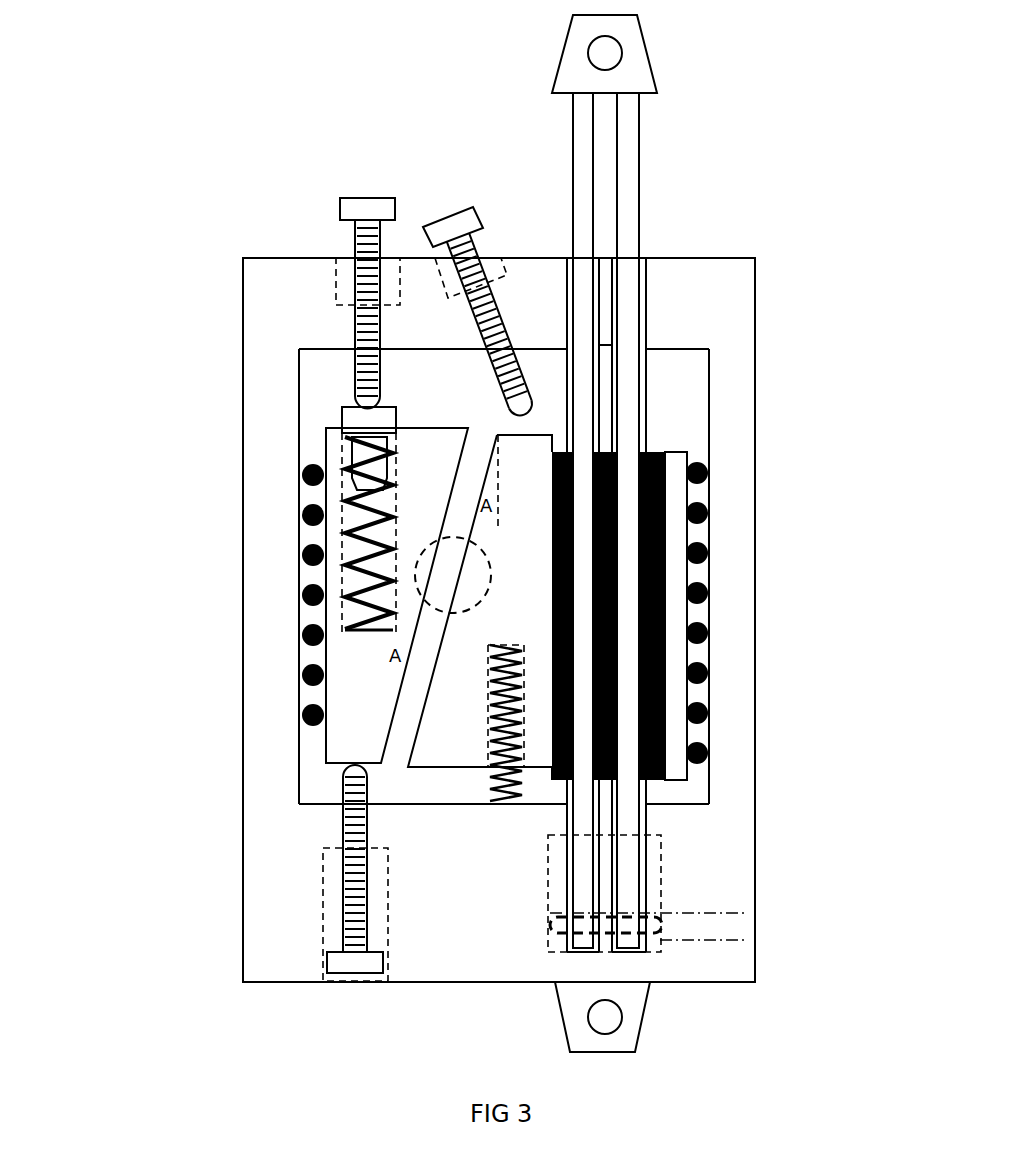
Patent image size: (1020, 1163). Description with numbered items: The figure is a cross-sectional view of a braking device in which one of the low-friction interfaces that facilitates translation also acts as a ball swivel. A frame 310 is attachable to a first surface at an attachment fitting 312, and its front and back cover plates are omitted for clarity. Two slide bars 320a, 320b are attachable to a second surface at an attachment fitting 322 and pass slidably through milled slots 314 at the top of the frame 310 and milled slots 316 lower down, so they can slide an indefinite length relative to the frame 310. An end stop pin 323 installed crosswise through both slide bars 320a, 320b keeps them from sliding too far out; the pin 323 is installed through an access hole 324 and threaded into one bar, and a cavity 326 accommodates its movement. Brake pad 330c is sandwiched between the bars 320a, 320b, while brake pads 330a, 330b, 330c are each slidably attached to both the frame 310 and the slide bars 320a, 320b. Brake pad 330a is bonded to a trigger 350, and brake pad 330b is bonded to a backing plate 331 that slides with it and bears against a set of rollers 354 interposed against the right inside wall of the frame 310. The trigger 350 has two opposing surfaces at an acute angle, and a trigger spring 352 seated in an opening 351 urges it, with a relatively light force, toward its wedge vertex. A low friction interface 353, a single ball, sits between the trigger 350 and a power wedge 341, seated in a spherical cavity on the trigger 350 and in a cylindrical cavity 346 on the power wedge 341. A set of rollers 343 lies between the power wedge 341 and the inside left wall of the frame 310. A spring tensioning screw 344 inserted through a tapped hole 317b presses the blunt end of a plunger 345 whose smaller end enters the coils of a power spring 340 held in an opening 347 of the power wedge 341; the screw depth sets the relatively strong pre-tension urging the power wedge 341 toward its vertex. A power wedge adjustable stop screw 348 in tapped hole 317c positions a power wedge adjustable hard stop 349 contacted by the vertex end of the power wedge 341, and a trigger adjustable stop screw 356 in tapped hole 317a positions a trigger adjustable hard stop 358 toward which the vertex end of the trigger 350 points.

The frame 310 is at (722, 322).
The attachment fitting 312 is at (612, 1017).
The milled slots 314 is at (643, 295).
The milled slots 316 is at (643, 815).
The tapped hole 317a is at (353, 332).
The tapped hole 317b is at (477, 323).
The tapped hole 317c is at (340, 767).
The slide bar 320a is at (585, 114).
The slide bar 320b is at (627, 169).
The attachment fitting 322 is at (612, 53).
The end stop pin 323 is at (660, 932).
The access hole 324 is at (722, 912).
The cavity 326 is at (662, 865).
The brake pad 330a is at (573, 587).
The brake pad 330b is at (665, 639).
The brake pad 330c is at (618, 688).
The backing plate 331 is at (672, 535).
The power spring 340 is at (427, 523).
The power wedge 341 is at (408, 542).
The set of rollers 343 is at (345, 610).
The spring tensioning screw 344 is at (360, 207).
The plunger 345 is at (358, 420).
The cylindrical cavity 346 is at (348, 487).
The opening 347 is at (345, 537).
The power wedge adjustable stop screw 348 is at (352, 962).
The power wedge adjustable hard stop 349 is at (490, 781).
The trigger 350 is at (462, 674).
The opening 351 is at (492, 690).
The trigger spring 352 is at (495, 705).
The low friction interface 353 is at (453, 575).
The set of rollers 354 is at (707, 473).
The trigger adjustable stop screw 356 is at (463, 218).
The trigger adjustable hard stop 358 is at (517, 412).